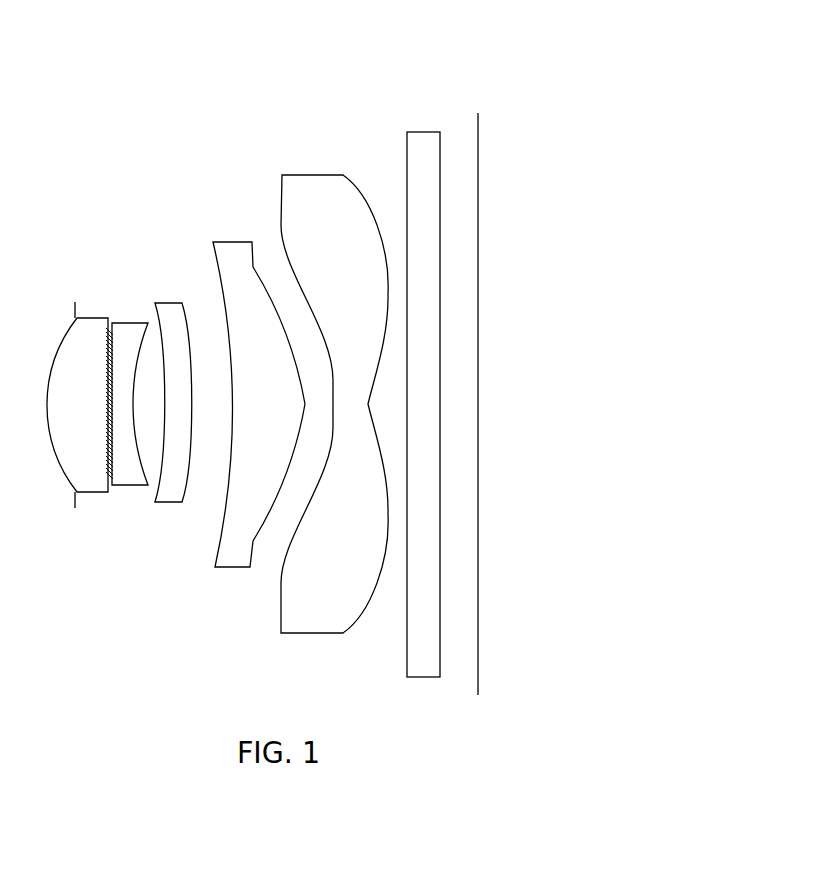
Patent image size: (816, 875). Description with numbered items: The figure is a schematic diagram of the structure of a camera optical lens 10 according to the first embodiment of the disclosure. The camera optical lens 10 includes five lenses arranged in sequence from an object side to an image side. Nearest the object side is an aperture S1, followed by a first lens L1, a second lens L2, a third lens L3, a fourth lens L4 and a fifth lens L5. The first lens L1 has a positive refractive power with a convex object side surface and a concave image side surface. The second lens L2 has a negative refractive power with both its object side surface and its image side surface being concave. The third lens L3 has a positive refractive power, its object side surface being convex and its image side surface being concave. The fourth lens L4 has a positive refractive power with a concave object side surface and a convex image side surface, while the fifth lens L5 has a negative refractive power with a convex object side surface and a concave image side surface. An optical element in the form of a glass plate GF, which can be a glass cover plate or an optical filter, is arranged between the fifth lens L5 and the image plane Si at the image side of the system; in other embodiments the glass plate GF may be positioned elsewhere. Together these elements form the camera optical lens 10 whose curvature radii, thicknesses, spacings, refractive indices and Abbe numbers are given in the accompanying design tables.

The camera optical lens 10 is at (293, 42).
The aperture S1 is at (55, 405).
The first lens L1 is at (80, 388).
The second lens L2 is at (130, 386).
The third lens L3 is at (173, 388).
The fourth lens L4 is at (259, 387).
The fifth lens L5 is at (334, 388).
The glass plate GF is at (422, 387).
The image plane Si is at (470, 390).